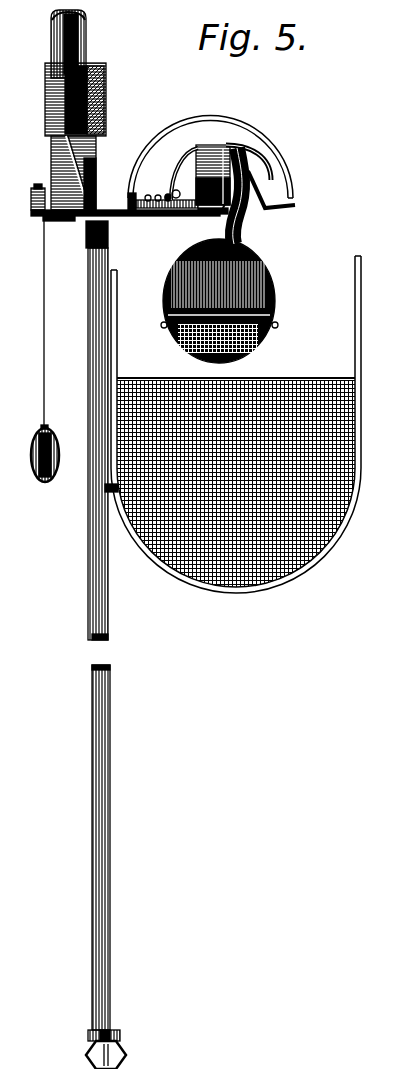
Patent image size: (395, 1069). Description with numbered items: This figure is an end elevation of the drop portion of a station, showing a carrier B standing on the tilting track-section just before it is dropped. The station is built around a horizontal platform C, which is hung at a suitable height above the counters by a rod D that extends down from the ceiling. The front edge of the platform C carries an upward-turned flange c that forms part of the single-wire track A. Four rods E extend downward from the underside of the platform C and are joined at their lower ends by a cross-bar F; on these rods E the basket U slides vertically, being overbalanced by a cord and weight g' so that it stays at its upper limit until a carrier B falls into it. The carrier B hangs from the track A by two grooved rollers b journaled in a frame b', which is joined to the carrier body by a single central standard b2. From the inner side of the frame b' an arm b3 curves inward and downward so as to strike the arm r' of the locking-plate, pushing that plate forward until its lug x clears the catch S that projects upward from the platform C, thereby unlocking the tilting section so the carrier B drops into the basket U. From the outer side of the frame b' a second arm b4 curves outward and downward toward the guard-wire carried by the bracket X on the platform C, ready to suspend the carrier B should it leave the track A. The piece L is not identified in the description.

The rod D is at (78, 30).
The bracket L is at (29, 197).
The platform C is at (125, 214).
The rods E is at (108, 576).
The cross-bar F is at (118, 1048).
The weight on cord g' is at (38, 349).
The basket U is at (236, 431).
The carrier B is at (225, 301).
The bracket X is at (195, 107).
The catch S is at (120, 170).
The lug x is at (271, 196).
The arm b3 is at (202, 137).
The frame b' is at (183, 171).
The arm b4 is at (258, 150).
The central standard b2 is at (238, 214).
The upward-turned flange c is at (214, 203).
The single-wire track A is at (202, 210).
The grooved rollers b is at (184, 194).
The arm r' is at (159, 189).